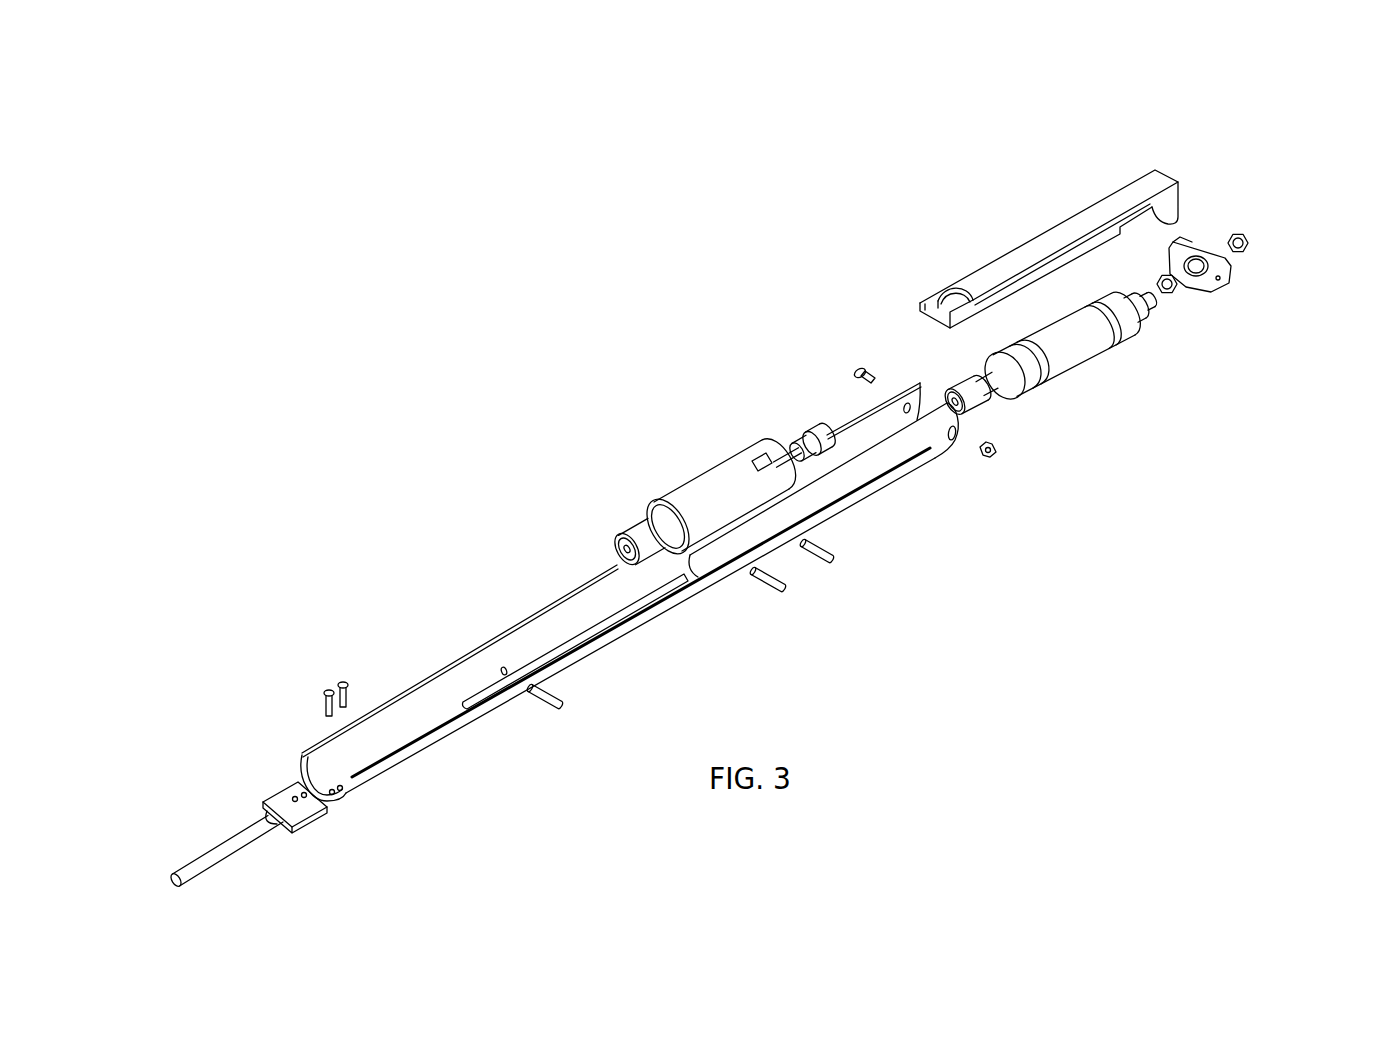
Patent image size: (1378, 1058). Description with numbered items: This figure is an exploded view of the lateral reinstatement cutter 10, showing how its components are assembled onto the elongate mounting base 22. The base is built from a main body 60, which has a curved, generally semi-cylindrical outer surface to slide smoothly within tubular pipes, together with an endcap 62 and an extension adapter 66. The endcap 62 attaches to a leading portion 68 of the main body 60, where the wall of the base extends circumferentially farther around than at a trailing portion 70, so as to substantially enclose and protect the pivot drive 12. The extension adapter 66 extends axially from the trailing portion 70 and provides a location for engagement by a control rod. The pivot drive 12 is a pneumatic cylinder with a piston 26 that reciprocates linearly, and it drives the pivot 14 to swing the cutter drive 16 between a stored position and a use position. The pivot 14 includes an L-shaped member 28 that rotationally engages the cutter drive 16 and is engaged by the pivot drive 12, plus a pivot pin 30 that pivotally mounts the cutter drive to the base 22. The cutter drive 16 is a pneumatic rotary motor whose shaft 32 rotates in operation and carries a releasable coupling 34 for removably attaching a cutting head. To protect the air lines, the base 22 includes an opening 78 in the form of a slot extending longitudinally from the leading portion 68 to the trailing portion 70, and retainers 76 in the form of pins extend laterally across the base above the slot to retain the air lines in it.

The lateral reinstatement cutter 10 is at (713, 627).
The pivot drive 12 is at (1106, 378).
The pivot 14 is at (1025, 186).
The cutter drive 16 is at (701, 439).
The mounting base 22 is at (907, 507).
The piston 26 is at (1155, 326).
The L-shaped member 28 is at (951, 226).
The pivot pin 30 is at (823, 585).
The shaft 32 is at (642, 509).
The releasable coupling 34 is at (607, 512).
The main body 60 is at (482, 617).
The endcap 62 is at (1261, 269).
The extension adapter 66 is at (199, 815).
The leading portion 68 is at (932, 458).
The trailing portion 70 is at (359, 792).
The retainers 76 is at (770, 583).
The opening 78 is at (587, 608).